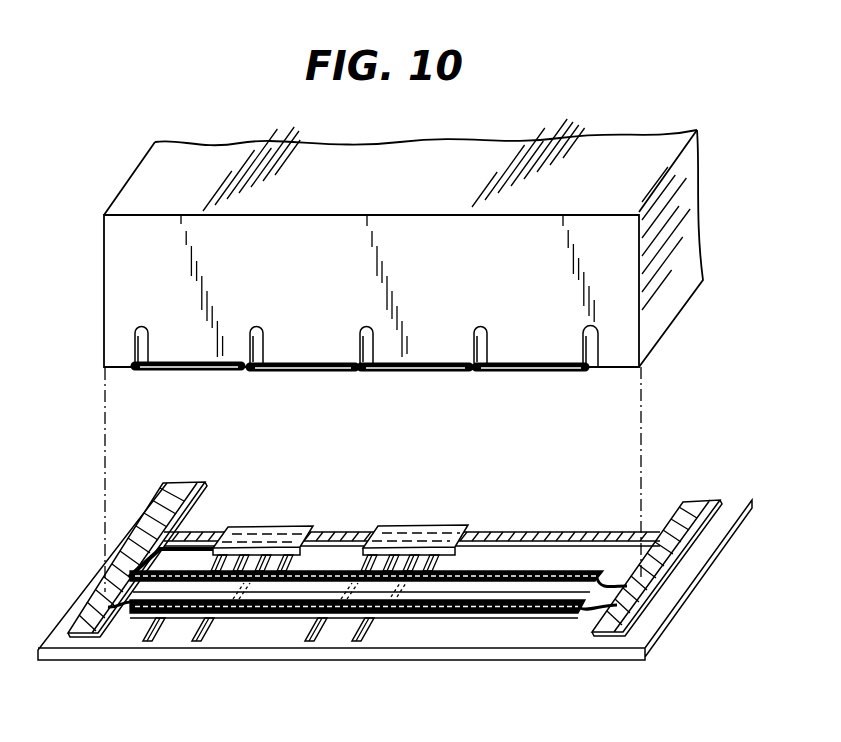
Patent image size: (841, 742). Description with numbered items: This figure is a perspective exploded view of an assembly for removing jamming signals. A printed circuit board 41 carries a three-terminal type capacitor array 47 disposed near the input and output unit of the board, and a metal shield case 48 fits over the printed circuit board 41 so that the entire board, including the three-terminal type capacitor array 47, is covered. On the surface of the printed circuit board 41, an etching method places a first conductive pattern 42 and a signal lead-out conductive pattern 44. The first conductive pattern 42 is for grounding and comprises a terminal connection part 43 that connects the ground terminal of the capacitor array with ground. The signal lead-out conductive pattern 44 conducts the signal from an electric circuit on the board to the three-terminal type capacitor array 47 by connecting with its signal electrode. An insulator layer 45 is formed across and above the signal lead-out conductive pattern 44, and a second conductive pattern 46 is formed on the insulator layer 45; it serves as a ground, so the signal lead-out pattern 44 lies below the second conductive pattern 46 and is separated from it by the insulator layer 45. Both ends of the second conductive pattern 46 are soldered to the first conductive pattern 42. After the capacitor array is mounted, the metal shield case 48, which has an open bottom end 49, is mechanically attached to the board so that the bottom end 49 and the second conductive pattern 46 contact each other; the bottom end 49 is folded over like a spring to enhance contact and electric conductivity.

The printed circuit board 41 is at (663, 633).
The first conductive pattern 42 is at (693, 547).
The terminal connection part 43 is at (413, 592).
The signal lead-out conductive pattern 44 is at (356, 643).
The insulator layer 45 is at (468, 593).
The second conductive pattern 46 is at (535, 593).
The three-terminal type capacitor array 47 is at (375, 528).
The metal shield case 48 is at (110, 306).
The bottom end 49 is at (173, 372).